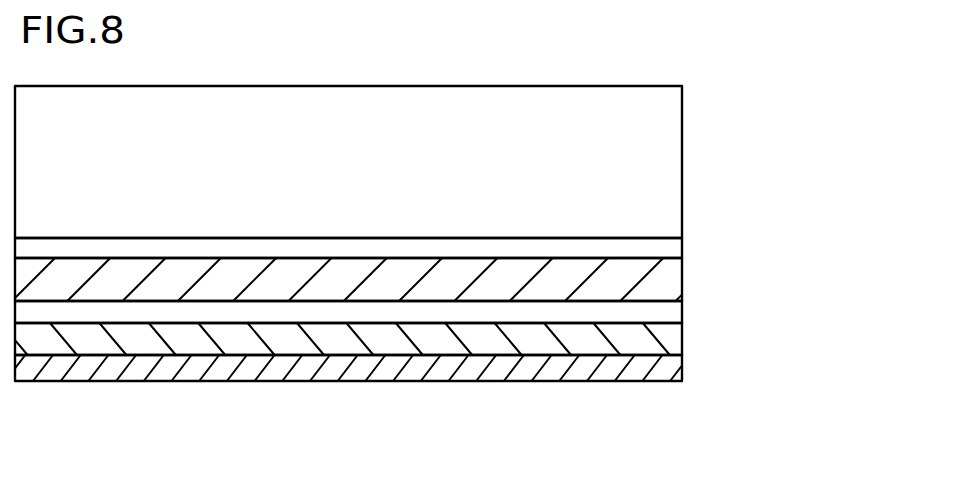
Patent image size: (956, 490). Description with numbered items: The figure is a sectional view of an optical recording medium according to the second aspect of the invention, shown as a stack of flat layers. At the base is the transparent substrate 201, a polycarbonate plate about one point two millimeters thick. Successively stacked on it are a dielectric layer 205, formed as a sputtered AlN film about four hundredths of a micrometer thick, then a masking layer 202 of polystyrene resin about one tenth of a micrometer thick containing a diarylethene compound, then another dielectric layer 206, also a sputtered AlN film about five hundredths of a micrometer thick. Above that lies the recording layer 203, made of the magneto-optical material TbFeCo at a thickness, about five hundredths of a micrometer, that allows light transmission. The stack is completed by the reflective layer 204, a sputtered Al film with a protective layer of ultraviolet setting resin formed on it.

The transparent substrate 201 is at (663, 160).
The dielectric layer 205 is at (672, 246).
The masking layer 202 is at (670, 279).
The dielectric layer 206 is at (667, 310).
The recording layer 203 is at (670, 343).
The reflective layer 204 is at (660, 375).